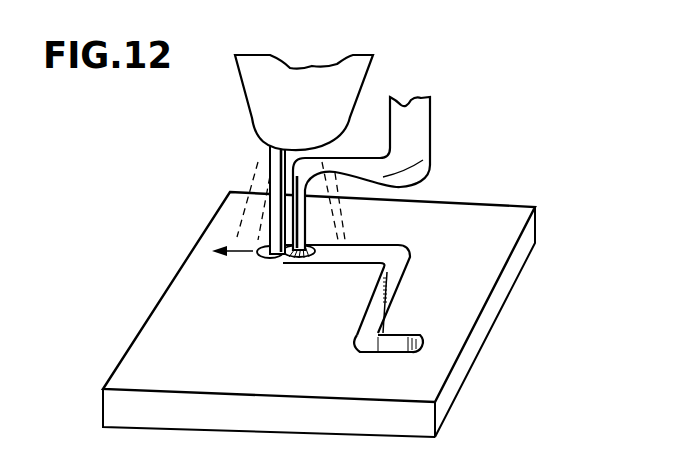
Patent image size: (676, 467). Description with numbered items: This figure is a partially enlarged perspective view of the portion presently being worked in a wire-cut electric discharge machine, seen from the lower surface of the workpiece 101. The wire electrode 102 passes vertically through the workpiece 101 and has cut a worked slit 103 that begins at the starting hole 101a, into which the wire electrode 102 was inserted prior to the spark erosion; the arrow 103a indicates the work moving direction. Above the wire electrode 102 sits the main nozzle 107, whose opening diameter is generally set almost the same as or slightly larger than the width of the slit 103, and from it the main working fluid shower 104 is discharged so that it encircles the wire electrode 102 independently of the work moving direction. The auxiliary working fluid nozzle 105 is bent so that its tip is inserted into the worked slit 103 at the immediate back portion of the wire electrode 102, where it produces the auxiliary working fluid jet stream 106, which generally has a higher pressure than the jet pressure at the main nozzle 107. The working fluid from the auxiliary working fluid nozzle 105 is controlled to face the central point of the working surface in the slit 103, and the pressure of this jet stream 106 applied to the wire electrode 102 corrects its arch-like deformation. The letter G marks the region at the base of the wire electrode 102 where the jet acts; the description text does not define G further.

The workpiece 101 is at (477, 297).
The starting hole 101a is at (420, 336).
The wire electrode 102 is at (272, 264).
The worked slit 103 is at (400, 262).
The arrow indicative of the work moving direction 103a is at (212, 251).
The main working fluid shower 104 is at (255, 183).
The auxiliary working fluid nozzle 105 is at (427, 158).
The auxiliary working fluid jet stream 106 is at (314, 262).
The main nozzle 107 is at (248, 113).
The gap G is at (258, 253).